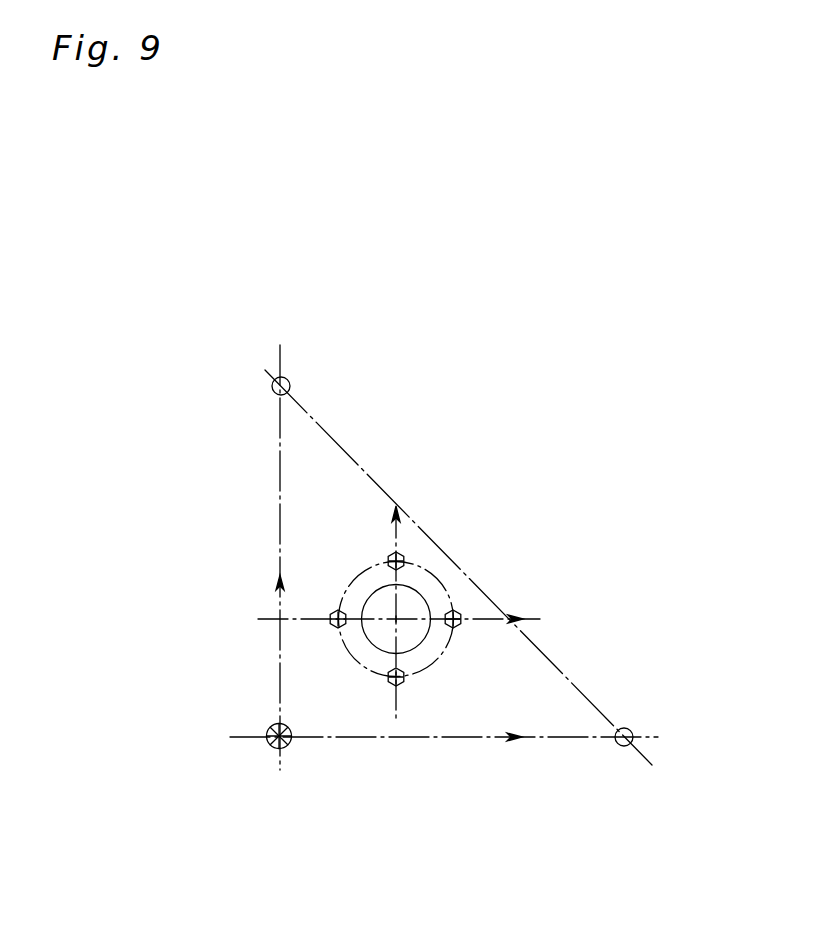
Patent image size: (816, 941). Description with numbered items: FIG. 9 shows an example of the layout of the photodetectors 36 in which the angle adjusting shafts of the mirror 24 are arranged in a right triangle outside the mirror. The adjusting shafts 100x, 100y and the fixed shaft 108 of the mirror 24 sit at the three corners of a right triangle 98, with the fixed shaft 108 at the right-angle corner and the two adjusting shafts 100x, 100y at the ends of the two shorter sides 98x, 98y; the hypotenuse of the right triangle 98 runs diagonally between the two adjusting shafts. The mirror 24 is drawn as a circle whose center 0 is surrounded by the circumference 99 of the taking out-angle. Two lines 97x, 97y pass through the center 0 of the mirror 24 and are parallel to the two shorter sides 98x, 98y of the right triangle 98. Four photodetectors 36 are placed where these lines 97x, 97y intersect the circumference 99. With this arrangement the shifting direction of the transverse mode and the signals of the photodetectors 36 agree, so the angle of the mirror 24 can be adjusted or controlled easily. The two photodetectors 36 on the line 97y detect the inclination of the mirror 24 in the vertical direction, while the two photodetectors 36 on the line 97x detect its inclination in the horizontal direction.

The mirror 24 is at (408, 585).
The photodetectors 36 is at (388, 553).
The right triangle 98 is at (337, 440).
The shorter side of the right triangle 98x is at (495, 737).
The shorter side of the right triangle 98y is at (280, 505).
The line 97x is at (478, 623).
The line 97y is at (395, 707).
The circumference of the taking out-angle 99 is at (420, 678).
The adjusting shaft 100x is at (625, 728).
The adjusting shaft 100y is at (287, 378).
The fixed shaft 108 is at (287, 746).
The center of the mirror 0 is at (394, 618).